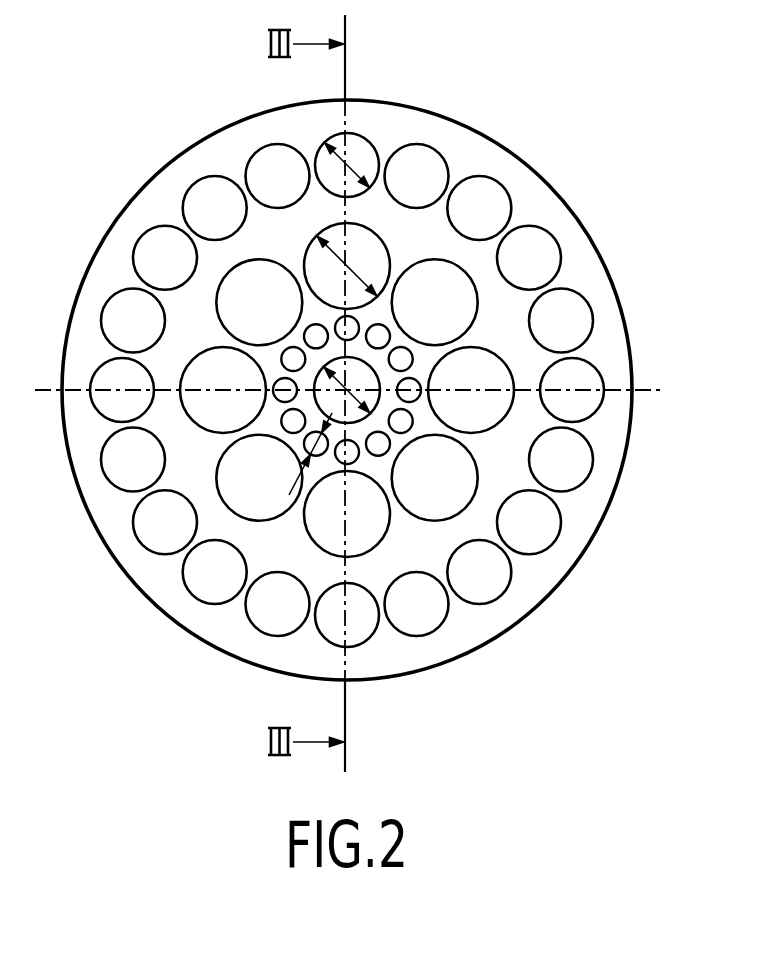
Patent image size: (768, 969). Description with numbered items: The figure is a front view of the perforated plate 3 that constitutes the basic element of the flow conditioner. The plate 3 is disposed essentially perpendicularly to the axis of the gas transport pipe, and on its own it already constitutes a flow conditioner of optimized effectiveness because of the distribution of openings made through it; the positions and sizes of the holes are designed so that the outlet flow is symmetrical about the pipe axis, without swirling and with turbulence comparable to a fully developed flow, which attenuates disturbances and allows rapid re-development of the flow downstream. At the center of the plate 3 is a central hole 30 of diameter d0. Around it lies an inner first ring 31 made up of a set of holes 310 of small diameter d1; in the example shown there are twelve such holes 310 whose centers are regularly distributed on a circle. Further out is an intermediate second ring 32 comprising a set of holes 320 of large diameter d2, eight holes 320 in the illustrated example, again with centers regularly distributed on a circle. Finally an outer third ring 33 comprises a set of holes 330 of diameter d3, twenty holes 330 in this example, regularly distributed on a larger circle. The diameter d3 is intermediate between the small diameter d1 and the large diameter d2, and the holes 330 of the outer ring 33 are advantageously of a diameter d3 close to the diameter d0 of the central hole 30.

The perforated plate 3 is at (148, 612).
The central hole 30 is at (373, 383).
The inner first ring 31 is at (310, 378).
The holes of the inner ring 310 is at (283, 422).
The intermediate second ring 32 is at (380, 378).
The holes of the intermediate ring 320 is at (476, 474).
The outer third ring 33 is at (351, 417).
The holes of the outer ring 330 is at (550, 545).
The diameter of the central hole d0 is at (360, 372).
The diameter of the inner ring holes d1 is at (289, 495).
The diameter of the intermediate ring holes d2 is at (349, 268).
The diameter of the outer ring holes d3 is at (353, 153).